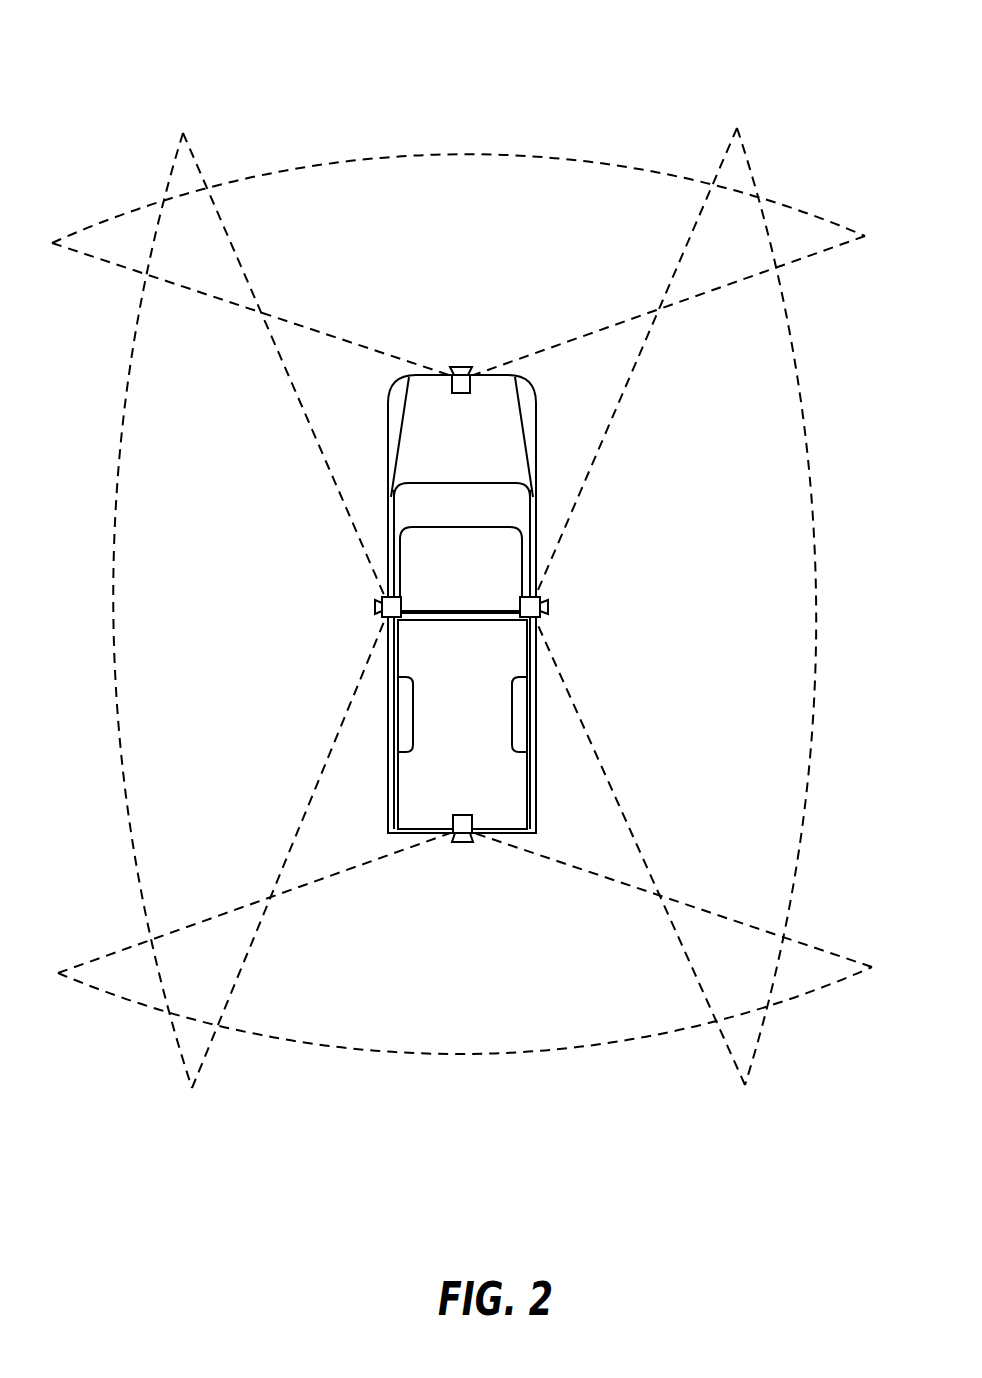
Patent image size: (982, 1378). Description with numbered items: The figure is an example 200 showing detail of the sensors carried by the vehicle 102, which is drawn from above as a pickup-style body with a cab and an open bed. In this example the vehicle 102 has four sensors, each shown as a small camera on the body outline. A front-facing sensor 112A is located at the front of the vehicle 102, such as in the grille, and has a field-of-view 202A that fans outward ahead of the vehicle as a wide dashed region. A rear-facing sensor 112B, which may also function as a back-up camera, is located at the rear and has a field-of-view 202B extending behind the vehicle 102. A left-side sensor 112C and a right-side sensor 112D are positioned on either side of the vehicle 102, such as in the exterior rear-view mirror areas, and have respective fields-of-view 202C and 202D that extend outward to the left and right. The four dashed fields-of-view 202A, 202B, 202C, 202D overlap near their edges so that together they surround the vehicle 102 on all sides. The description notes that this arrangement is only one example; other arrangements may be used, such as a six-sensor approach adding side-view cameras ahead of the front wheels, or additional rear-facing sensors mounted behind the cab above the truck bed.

The example detail of the sensors 200 is at (190, 31).
The vehicle 102 is at (479, 561).
The front-facing sensor 112A is at (457, 367).
The rear-facing sensor 112B is at (462, 842).
The left-side sensor 112C is at (375, 607).
The right-side sensor 112D is at (548, 607).
The field-of-view 202A is at (475, 204).
The field-of-view 202B is at (488, 1023).
The field-of-view 202C is at (170, 626).
The field-of-view 202D is at (805, 622).